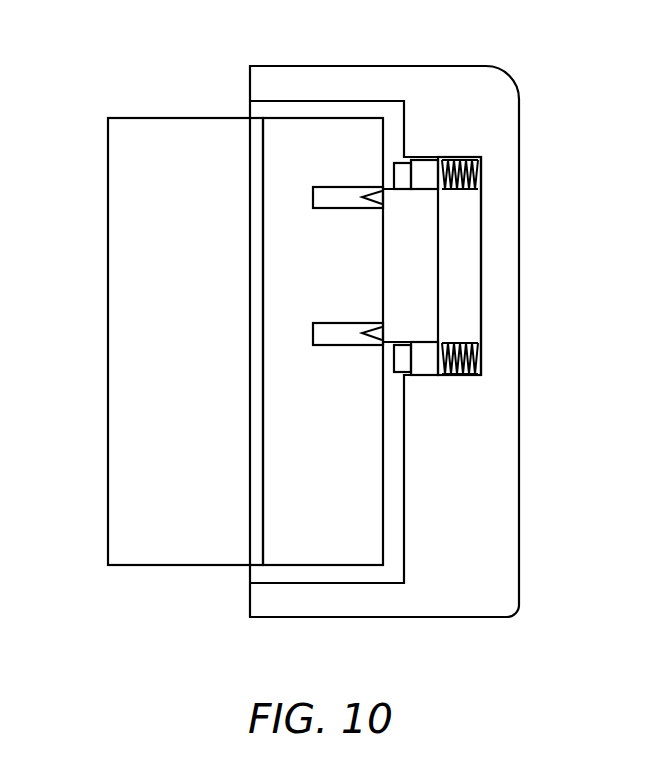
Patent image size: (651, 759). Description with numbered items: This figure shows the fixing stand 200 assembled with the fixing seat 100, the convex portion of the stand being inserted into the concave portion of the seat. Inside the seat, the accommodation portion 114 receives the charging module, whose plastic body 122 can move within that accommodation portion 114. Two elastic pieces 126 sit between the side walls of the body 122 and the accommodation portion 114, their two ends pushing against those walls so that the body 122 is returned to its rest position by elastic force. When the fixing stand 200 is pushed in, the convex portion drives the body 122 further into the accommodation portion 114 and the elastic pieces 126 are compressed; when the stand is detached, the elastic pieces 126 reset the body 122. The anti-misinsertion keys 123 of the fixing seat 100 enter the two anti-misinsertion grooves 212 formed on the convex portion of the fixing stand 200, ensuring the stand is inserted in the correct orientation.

The fixing seat 100 is at (492, 478).
The accommodation portion 114 is at (467, 303).
The body 122 is at (430, 252).
The anti-misinsertion key 123 is at (382, 195).
The elastic piece 126 is at (481, 172).
The fixing stand 200 is at (127, 307).
The anti-misinsertion groove 212 is at (322, 197).